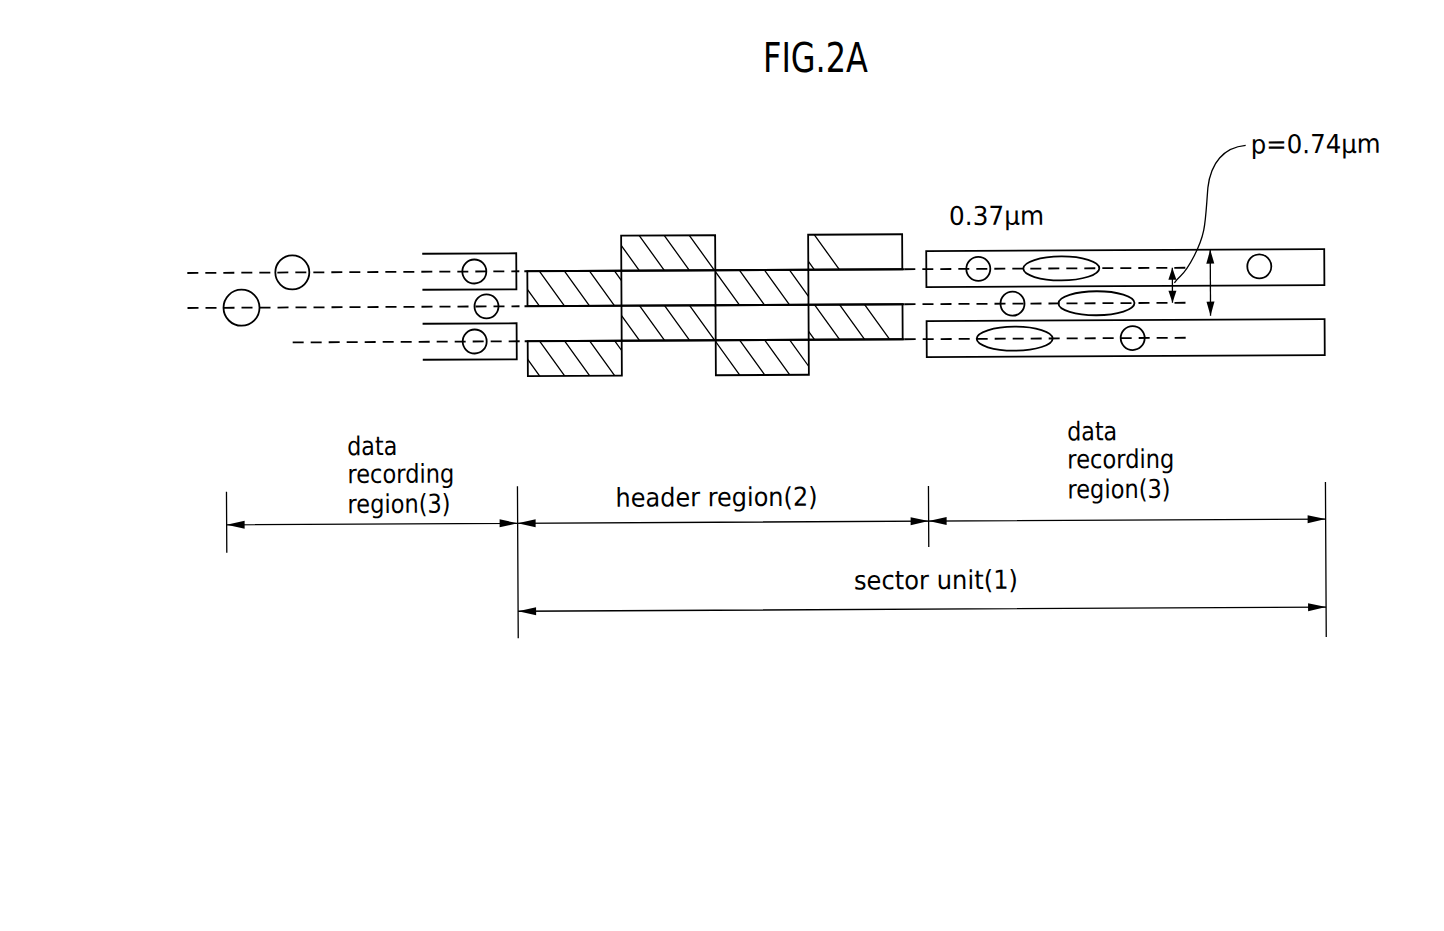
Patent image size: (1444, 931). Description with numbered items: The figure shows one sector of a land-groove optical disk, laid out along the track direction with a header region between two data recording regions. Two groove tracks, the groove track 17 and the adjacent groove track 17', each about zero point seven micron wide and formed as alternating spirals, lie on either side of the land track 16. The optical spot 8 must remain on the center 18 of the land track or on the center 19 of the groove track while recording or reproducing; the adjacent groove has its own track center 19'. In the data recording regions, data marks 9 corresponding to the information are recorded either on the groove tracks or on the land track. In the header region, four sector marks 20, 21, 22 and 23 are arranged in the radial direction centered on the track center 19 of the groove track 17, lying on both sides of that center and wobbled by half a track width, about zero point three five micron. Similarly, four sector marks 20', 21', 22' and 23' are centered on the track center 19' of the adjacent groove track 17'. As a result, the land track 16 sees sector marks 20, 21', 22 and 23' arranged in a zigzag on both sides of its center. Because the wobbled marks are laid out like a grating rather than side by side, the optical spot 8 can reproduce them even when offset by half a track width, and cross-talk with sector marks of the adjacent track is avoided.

The optical spot 8 is at (245, 287).
The data mark 9 is at (1113, 292).
The land track 16 is at (1220, 297).
The groove track 17 is at (1162, 268).
The groove track 17' is at (1166, 338).
The center of the land track 18 is at (180, 305).
The center of the groove track 19 is at (301, 255).
The track center of the adjacent groove track 19' is at (406, 387).
The sector mark 20 is at (664, 273).
The sector mark 21 is at (664, 273).
The sector mark 22 is at (664, 273).
The sector mark 23 is at (664, 273).
The sector mark 20' is at (664, 349).
The sector mark 21' is at (664, 350).
The sector mark 22' is at (664, 348).
The sector mark 23' is at (664, 350).